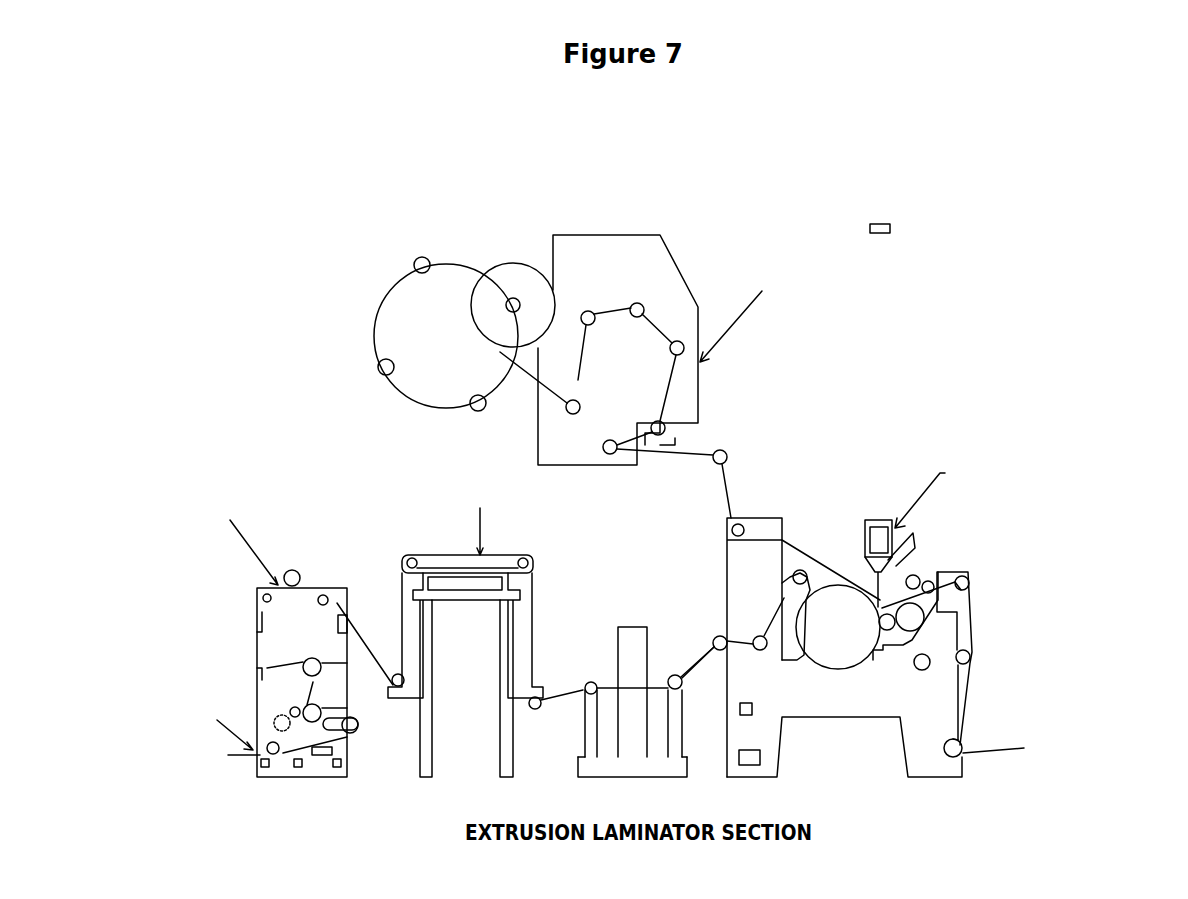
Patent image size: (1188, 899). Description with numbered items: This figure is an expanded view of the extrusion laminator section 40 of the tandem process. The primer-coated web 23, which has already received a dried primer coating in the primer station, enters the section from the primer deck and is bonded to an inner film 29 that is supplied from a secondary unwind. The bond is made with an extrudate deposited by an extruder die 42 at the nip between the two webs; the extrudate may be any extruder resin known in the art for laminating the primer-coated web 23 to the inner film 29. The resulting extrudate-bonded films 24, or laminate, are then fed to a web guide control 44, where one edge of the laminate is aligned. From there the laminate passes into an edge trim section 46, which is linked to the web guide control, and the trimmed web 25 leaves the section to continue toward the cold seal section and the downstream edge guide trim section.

The extrusion laminator section 40 is at (1111, 300).
The inner film 29 is at (527, 378).
The extrudate-bonded films 24 is at (832, 670).
The extruder die 42 is at (954, 535).
The primer-coated web 23 is at (962, 693).
The web guide control 44 is at (475, 640).
The edge trim section 46 is at (229, 645).
The trimmed web 25 is at (293, 670).